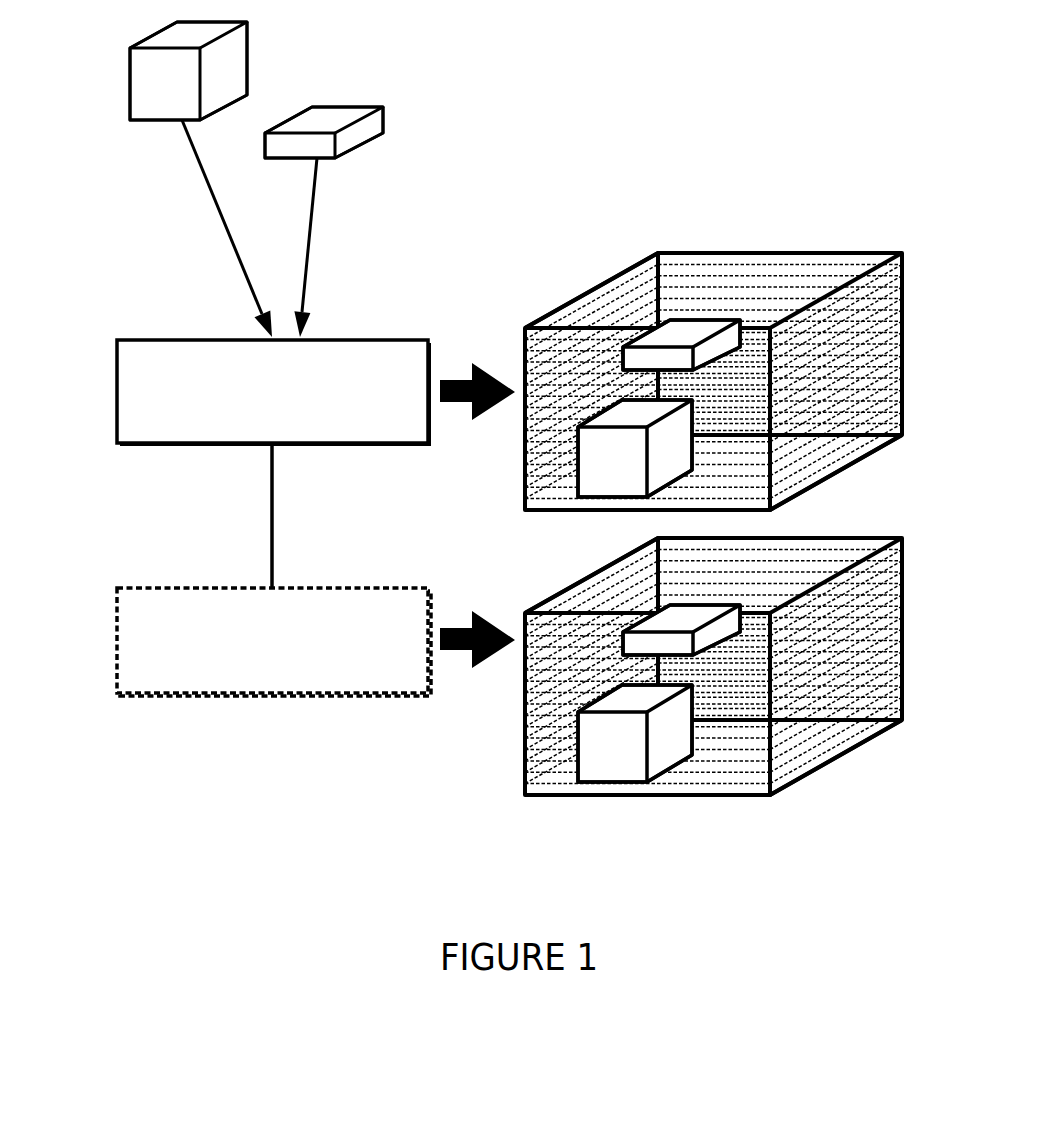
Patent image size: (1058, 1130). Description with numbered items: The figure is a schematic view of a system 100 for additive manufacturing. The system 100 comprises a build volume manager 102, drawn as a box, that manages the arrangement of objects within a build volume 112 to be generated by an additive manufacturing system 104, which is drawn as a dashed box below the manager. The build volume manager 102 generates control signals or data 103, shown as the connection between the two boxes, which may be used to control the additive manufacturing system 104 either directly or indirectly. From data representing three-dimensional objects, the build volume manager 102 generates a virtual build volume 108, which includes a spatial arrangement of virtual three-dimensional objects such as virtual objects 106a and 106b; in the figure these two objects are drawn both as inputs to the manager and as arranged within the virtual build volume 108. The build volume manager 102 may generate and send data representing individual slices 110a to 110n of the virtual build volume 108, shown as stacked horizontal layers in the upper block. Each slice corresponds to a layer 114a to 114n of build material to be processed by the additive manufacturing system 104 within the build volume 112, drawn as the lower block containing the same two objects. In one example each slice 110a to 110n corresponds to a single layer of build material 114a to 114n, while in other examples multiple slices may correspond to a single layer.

The system 100 is at (714, 80).
The build volume manager 102 is at (220, 338).
The control signals or data 103 is at (278, 548).
The additive manufacturing system 104 is at (225, 588).
The virtual object 106a is at (130, 96).
The virtual object 106b is at (383, 120).
The virtual build volume 108 is at (523, 355).
The slice 110a is at (903, 436).
The slice 110n is at (903, 257).
The build volume 112 is at (525, 700).
The layer of build material 114a is at (903, 721).
The layer of build material 114n is at (903, 542).